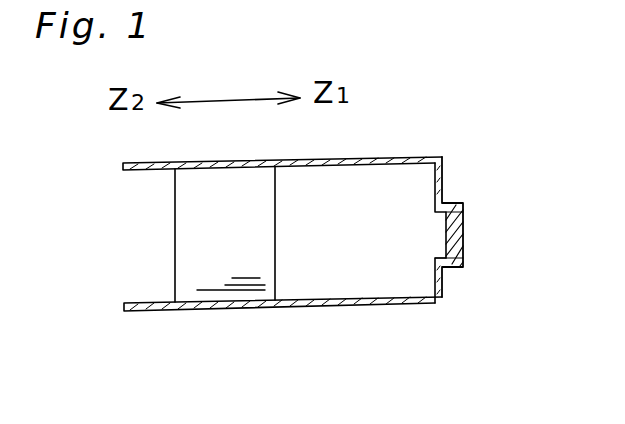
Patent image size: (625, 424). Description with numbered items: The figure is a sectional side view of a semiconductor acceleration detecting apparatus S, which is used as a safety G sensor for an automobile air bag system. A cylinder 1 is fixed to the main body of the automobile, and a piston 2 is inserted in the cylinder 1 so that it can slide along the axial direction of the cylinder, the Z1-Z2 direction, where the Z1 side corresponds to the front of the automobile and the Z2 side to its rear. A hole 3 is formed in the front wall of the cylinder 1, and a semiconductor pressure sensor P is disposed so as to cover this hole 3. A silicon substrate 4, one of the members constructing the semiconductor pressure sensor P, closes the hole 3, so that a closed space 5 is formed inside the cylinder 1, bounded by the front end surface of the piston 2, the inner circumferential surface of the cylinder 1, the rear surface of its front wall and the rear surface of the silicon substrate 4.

The cylinder 1 is at (390, 158).
The piston 2 is at (193, 280).
The hole 3 is at (437, 258).
The silicon substrate 4 is at (467, 212).
The closed space 5 is at (352, 242).
The semiconductor pressure sensor P is at (462, 200).
The semiconductor acceleration detecting apparatus S is at (98, 150).